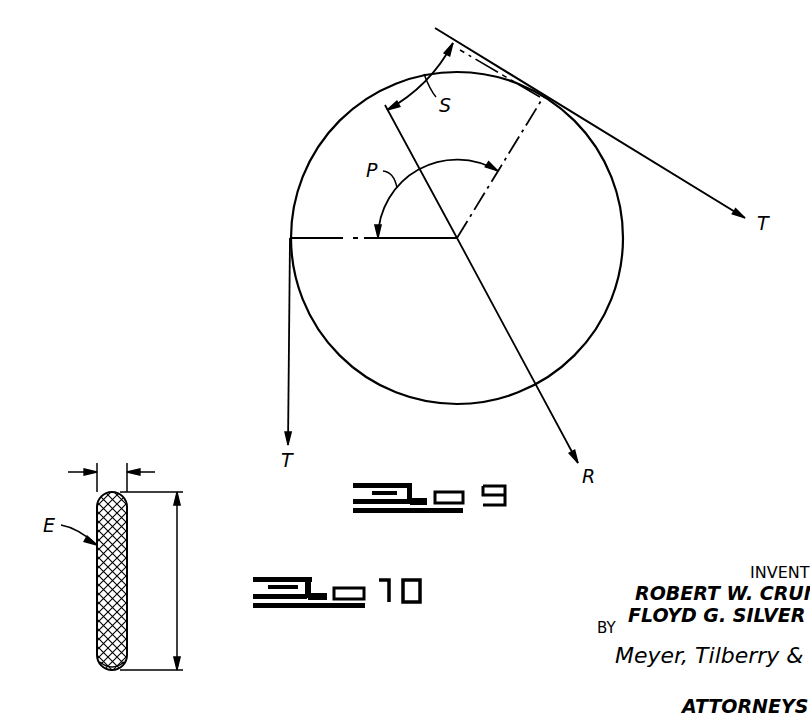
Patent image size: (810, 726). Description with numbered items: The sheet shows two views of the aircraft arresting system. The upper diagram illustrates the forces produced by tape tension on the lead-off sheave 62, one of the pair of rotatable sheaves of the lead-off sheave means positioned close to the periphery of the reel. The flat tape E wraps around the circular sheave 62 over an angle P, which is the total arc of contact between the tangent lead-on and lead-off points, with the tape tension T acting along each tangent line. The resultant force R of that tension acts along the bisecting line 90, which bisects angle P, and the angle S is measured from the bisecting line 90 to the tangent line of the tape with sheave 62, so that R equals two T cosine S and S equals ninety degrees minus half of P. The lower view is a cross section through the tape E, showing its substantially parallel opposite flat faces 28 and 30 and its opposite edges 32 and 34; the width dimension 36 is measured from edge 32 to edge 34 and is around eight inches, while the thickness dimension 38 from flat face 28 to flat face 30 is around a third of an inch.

In FIG. 9, the rotatable sheave 62 is at (297, 192).
In FIG. 9, the bisecting line 90 is at (505, 327).
In FIG. 10, the flat face 28 is at (97, 585).
In FIG. 10, the flat face 30 is at (126, 545).
In FIG. 10, the edge 32 is at (107, 668).
In FIG. 10, the edge 34 is at (103, 492).
In FIG. 10, the width dimension 36 is at (177, 588).
In FIG. 10, the thickness dimension 38 is at (113, 470).